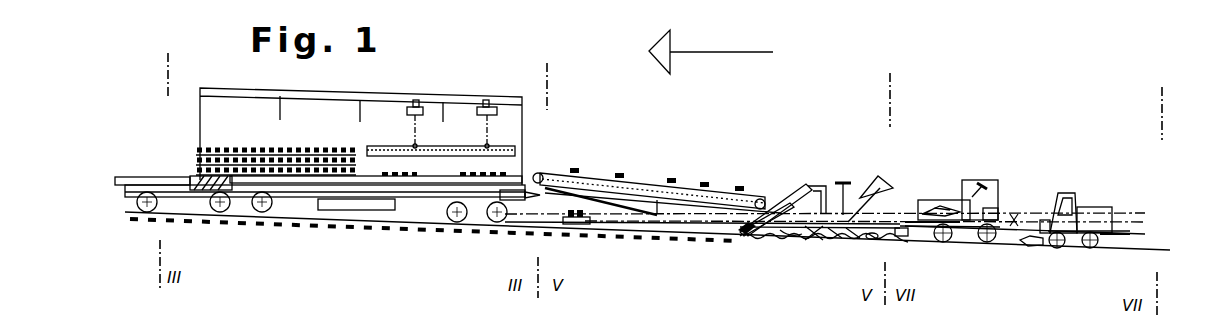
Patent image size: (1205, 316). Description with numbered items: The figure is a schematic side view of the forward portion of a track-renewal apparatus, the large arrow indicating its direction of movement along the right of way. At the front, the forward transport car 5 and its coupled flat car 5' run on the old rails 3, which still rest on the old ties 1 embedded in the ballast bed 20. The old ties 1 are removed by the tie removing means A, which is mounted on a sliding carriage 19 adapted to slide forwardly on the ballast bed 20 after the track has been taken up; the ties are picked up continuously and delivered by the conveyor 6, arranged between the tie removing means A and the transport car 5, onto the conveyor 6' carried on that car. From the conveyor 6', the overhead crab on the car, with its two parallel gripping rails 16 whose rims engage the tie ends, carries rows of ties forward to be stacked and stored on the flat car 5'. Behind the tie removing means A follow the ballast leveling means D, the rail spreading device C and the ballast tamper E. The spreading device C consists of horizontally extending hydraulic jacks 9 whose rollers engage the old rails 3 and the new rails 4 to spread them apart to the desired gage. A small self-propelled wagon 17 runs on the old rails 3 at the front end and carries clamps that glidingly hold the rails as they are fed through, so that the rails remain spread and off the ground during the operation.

The old ties 1 is at (200, 157).
The old rails 3 is at (552, 226).
The new rails 4 is at (537, 218).
The forward transport car 5 is at (332, 220).
The flat car 5' is at (165, 159).
The conveyor means 6 is at (656, 180).
The conveyor 6' is at (376, 216).
The hydraulic jacks 9 is at (1017, 222).
The gripping rails 16 is at (438, 145).
The self-propelled wagon 17 is at (585, 224).
The sliding carriage 19 is at (835, 240).
The ballast bed 20 is at (793, 238).
The tie removing means A is at (813, 186).
The rail spreading device C is at (1015, 210).
The ballast leveling means D is at (946, 200).
The ballast tamper E is at (1094, 207).